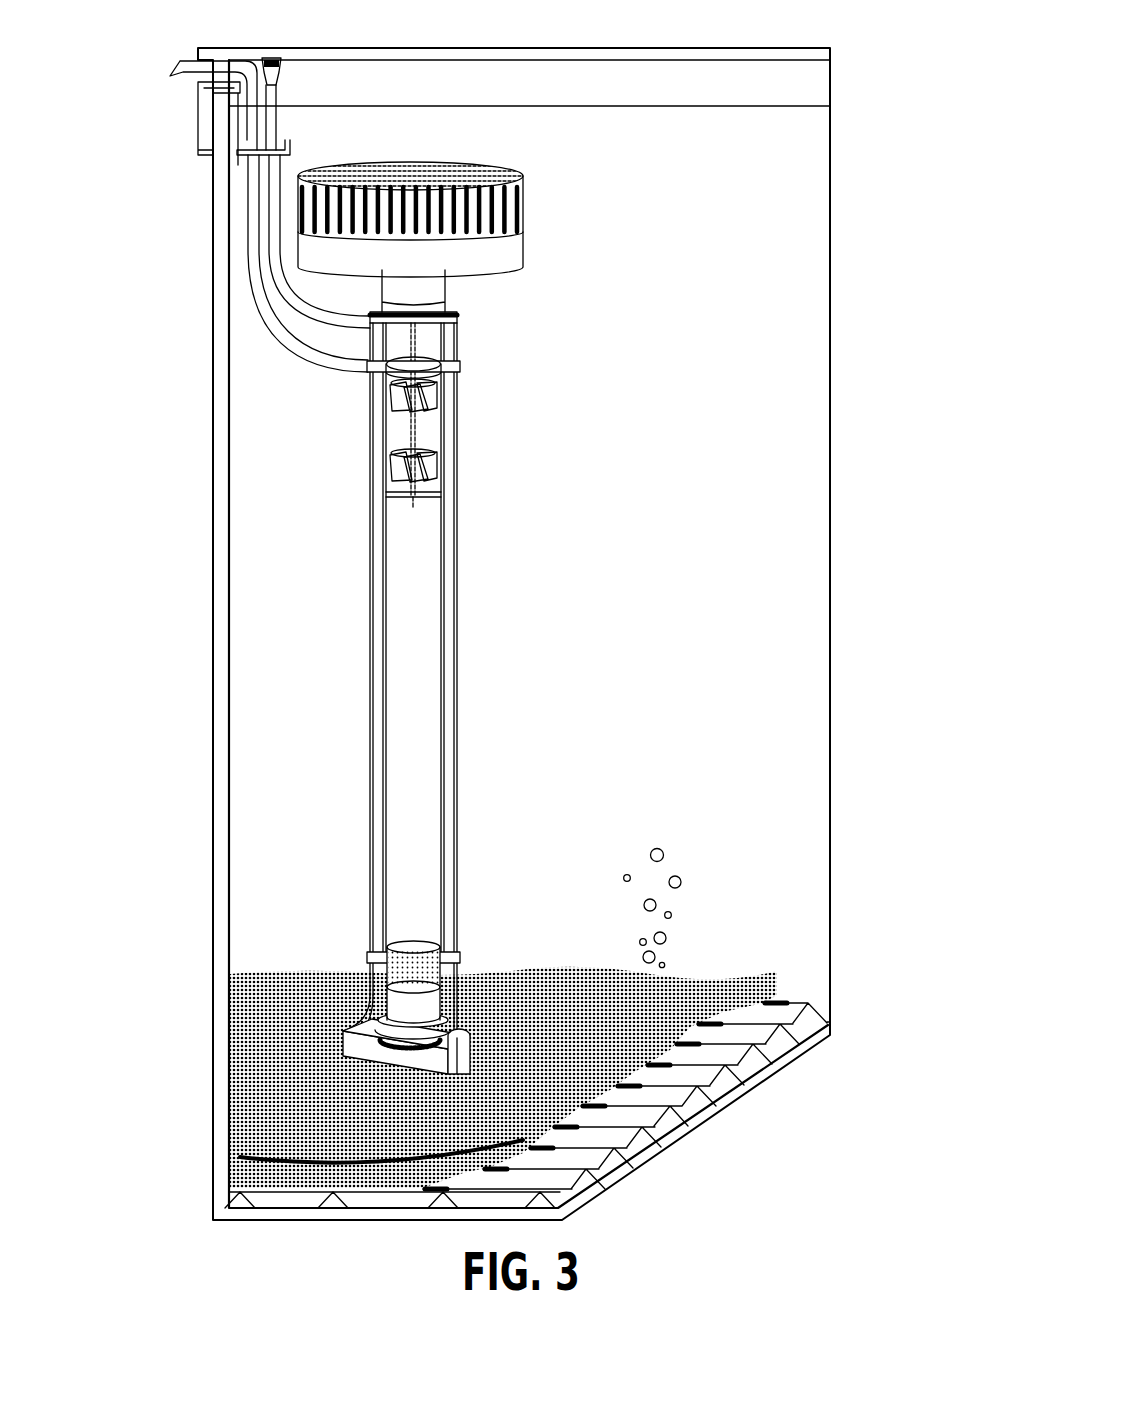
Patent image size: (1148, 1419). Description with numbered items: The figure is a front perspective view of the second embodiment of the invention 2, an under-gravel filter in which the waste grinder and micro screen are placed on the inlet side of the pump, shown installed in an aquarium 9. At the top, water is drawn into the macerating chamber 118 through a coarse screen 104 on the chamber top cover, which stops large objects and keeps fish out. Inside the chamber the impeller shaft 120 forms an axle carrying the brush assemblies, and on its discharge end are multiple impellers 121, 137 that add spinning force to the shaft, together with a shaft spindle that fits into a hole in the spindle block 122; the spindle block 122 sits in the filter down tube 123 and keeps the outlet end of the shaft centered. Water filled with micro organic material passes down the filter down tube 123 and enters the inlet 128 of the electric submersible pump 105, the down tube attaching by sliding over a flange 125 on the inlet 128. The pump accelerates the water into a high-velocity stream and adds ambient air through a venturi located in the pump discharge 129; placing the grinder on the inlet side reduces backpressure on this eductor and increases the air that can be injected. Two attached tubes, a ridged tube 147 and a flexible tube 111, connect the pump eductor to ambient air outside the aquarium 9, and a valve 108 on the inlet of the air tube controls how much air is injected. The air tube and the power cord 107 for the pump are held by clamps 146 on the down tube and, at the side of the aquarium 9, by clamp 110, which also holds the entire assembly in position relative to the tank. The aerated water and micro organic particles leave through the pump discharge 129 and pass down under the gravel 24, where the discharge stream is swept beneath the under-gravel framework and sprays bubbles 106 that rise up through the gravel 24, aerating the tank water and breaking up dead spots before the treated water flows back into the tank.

The aquarium 9 is at (758, 46).
The second embodiment of the invention 2 is at (538, 249).
The coarse screen 104 is at (466, 162).
The macerating chamber 118 is at (524, 192).
The valve 108 is at (270, 56).
The clamp 110 is at (278, 173).
The power cord 107 is at (250, 228).
The flexible tube 111 is at (277, 272).
The ridged tube 147 is at (458, 330).
The clamps 146 is at (369, 367).
The impeller 121 is at (438, 394).
The impeller shaft 120 is at (418, 437).
The impeller 137 is at (438, 474).
The spindle block 122 is at (436, 497).
The filter down tube 123 is at (432, 734).
The inlet 128 is at (412, 983).
The flange 125 is at (433, 1010).
The pump discharge 129 is at (473, 1030).
The electric submersible pump 105 is at (350, 1018).
The gravel 24 is at (270, 968).
The bubbles 106 is at (682, 880).